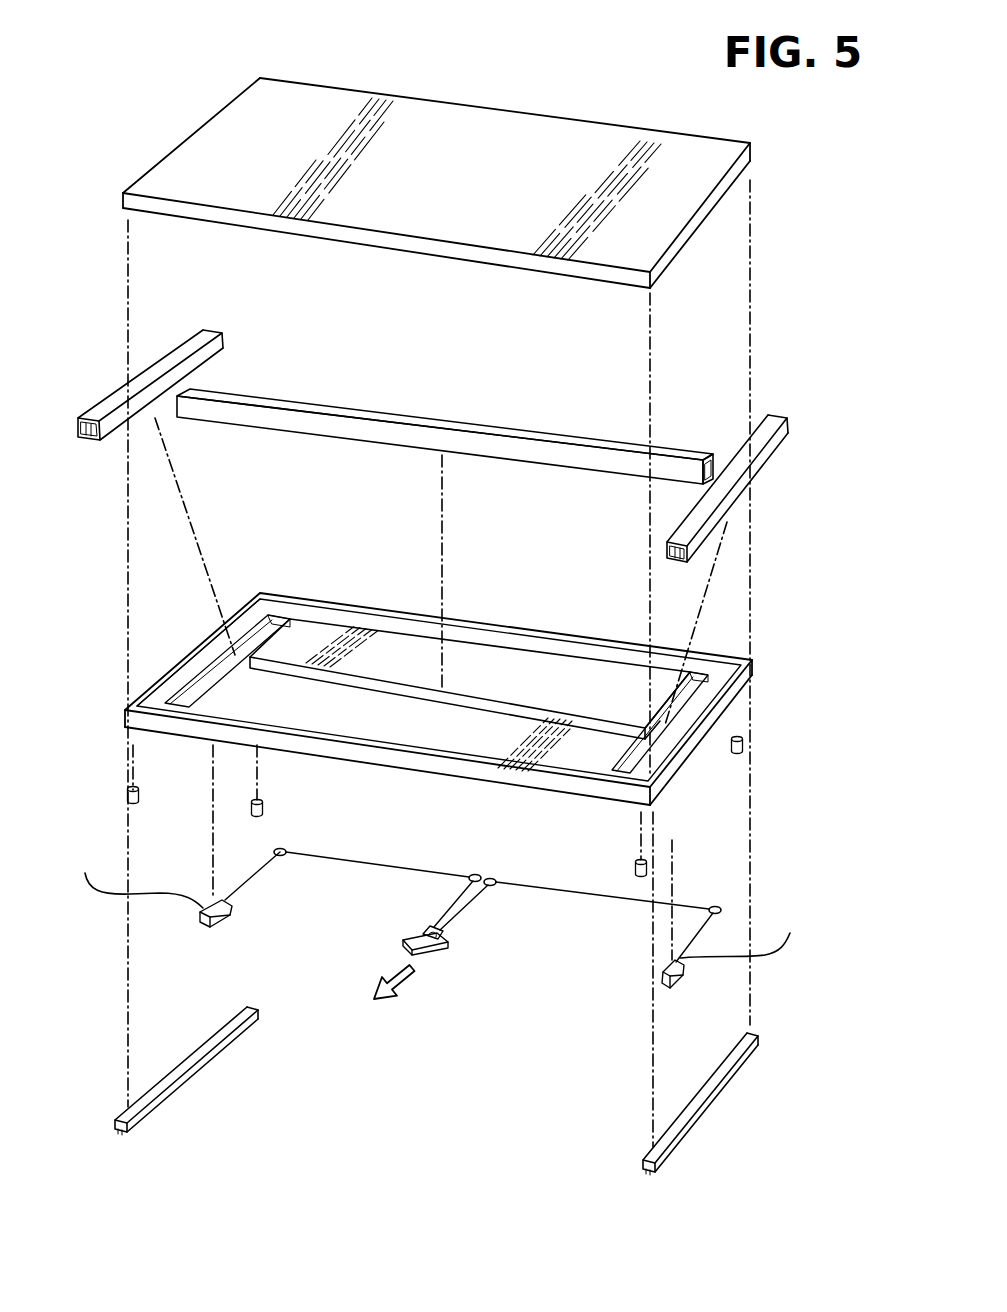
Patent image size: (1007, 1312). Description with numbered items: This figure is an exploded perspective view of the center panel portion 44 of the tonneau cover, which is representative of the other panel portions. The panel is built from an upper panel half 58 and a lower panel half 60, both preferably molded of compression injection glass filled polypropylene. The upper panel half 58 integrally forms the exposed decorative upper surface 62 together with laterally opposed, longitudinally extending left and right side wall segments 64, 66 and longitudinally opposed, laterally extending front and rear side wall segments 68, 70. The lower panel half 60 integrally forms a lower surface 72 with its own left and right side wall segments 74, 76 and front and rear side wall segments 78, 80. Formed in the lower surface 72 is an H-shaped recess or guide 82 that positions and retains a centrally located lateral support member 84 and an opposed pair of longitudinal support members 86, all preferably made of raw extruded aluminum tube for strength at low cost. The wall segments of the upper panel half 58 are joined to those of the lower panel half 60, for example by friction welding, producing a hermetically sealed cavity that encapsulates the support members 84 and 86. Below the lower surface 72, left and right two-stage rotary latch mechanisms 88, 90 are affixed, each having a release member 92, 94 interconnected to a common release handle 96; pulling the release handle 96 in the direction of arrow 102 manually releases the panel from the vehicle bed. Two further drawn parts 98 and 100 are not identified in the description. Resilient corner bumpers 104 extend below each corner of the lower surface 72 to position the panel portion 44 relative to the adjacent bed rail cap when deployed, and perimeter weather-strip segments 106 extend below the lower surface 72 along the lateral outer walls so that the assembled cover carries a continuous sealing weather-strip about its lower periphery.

The center panel portion 44 is at (150, 115).
The upper panel half 58 is at (625, 118).
The lower panel half 60 is at (576, 630).
The exposed decorative upper surface 62 is at (475, 145).
The left side wall segment 64 is at (140, 183).
The right side wall segment 66 is at (707, 205).
The front side wall segment 68 is at (703, 133).
The rear side wall segment 70 is at (425, 250).
The lower surface 72 is at (393, 645).
The left side wall segment 74 is at (177, 673).
The right side wall segment 76 is at (710, 722).
The front side wall segment 78 is at (513, 635).
The rear side wall segment 80 is at (430, 767).
The H-shaped recess or guide 82 is at (228, 660).
The lateral support member 84 is at (320, 425).
The longitudinal support members 86 is at (105, 410).
The left two stage rotary latch mechanism 88 is at (136, 876).
The right two stage rotary latch mechanism 90 is at (742, 932).
The release member 92 is at (203, 927).
The release member 94 is at (670, 988).
The release handle 96 is at (450, 948).
The left tether 98 is at (352, 875).
The right tether 100 is at (585, 895).
The arrow 102 is at (388, 992).
The resilient corner bumpers 104 is at (140, 795).
The perimeter weather-strip segments 106 is at (180, 1078).